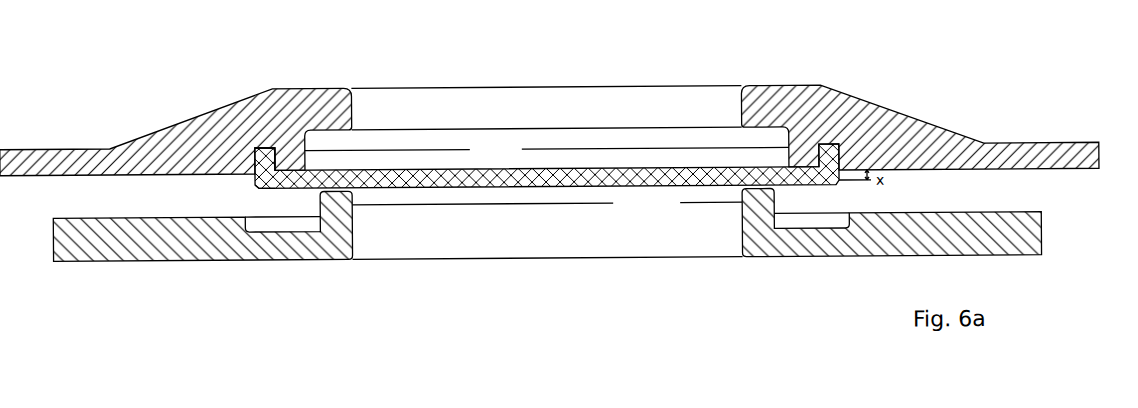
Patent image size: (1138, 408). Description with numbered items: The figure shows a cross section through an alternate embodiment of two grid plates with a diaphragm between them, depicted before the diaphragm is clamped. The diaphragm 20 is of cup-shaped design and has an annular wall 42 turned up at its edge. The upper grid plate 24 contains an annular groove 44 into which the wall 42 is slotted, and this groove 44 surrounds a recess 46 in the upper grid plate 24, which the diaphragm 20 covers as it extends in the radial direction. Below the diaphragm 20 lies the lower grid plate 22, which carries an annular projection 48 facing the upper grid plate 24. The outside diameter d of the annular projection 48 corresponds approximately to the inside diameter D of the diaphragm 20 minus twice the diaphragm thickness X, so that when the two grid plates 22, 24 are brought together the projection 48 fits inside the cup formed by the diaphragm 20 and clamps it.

The diaphragm 20 is at (550, 187).
The lower grid plate 22 is at (865, 259).
The upper grid plate 24 is at (870, 124).
The annular wall 42 is at (259, 186).
The annular groove 44 is at (271, 146).
The recess 46 is at (769, 140).
The annular projection 48 is at (778, 218).